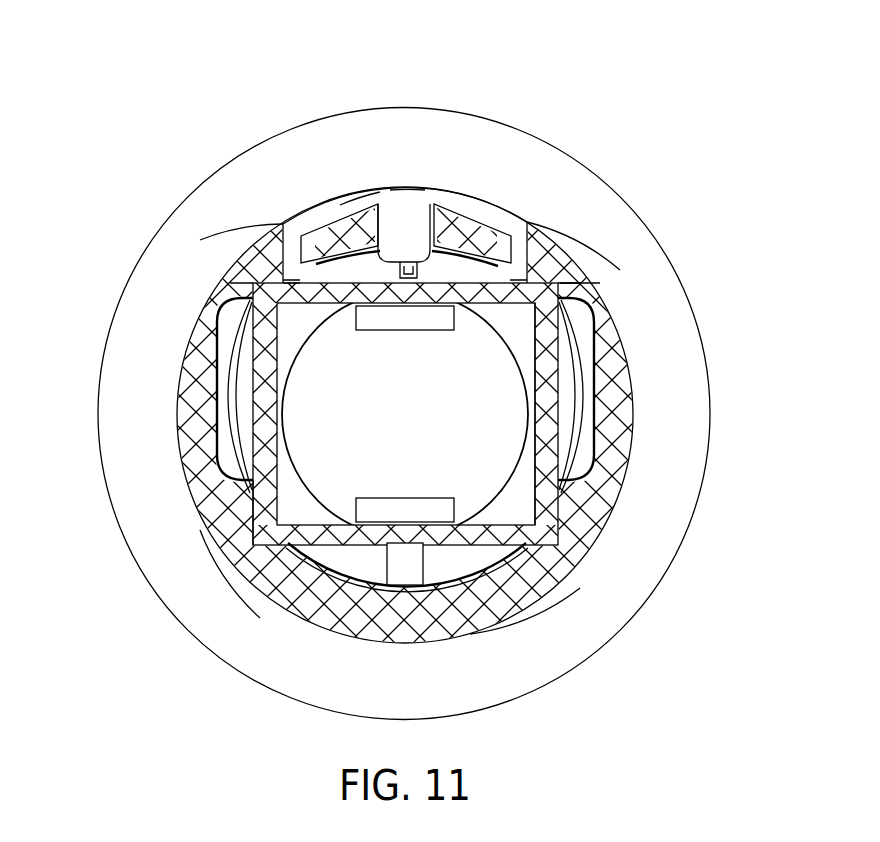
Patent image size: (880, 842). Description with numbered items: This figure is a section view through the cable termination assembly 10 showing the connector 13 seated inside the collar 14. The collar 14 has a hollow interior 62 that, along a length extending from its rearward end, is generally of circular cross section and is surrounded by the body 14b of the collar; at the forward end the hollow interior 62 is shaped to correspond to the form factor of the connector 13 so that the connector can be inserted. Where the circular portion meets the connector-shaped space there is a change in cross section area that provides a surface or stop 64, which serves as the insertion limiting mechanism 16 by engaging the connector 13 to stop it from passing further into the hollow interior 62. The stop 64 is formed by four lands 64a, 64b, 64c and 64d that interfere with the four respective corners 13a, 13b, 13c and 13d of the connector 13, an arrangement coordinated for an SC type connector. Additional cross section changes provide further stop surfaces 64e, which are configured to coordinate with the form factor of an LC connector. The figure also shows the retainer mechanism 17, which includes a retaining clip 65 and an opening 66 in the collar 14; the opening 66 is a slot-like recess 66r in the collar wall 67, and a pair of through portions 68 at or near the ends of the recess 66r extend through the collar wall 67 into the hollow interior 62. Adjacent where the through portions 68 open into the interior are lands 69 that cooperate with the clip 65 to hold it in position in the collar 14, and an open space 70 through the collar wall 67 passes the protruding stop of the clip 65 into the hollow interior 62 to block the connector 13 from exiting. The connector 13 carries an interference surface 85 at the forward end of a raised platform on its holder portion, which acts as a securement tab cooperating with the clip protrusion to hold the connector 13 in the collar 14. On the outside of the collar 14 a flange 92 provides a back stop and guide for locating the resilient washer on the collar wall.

The cable termination assembly 10 is at (232, 104).
The connector 13 is at (553, 512).
The corner of the connector 13a is at (233, 313).
The corner of the connector 13b is at (595, 300).
The corner of the connector 13c is at (557, 537).
The corner of the connector 13d is at (262, 533).
The collar 14 is at (628, 368).
The body of the collar 14b is at (623, 432).
The insertion limiting mechanism 16 is at (590, 258).
The retainer mechanism 17 is at (407, 163).
The hollow interior 62 is at (360, 272).
The surface or stop 64 is at (613, 275).
The land 64a is at (233, 240).
The land 64b is at (577, 227).
The land 64c is at (550, 568).
The land 64d is at (250, 507).
The stop surface 64e is at (222, 338).
The retaining clip 65 is at (440, 183).
The opening 66 is at (272, 207).
The slot-like recess 66r is at (355, 173).
The collar wall 67 is at (240, 268).
The through portions 68 is at (263, 263).
The lands 69 is at (340, 262).
The open space 70 is at (440, 190).
The interference surface 85 is at (390, 277).
The flange 92 is at (672, 540).